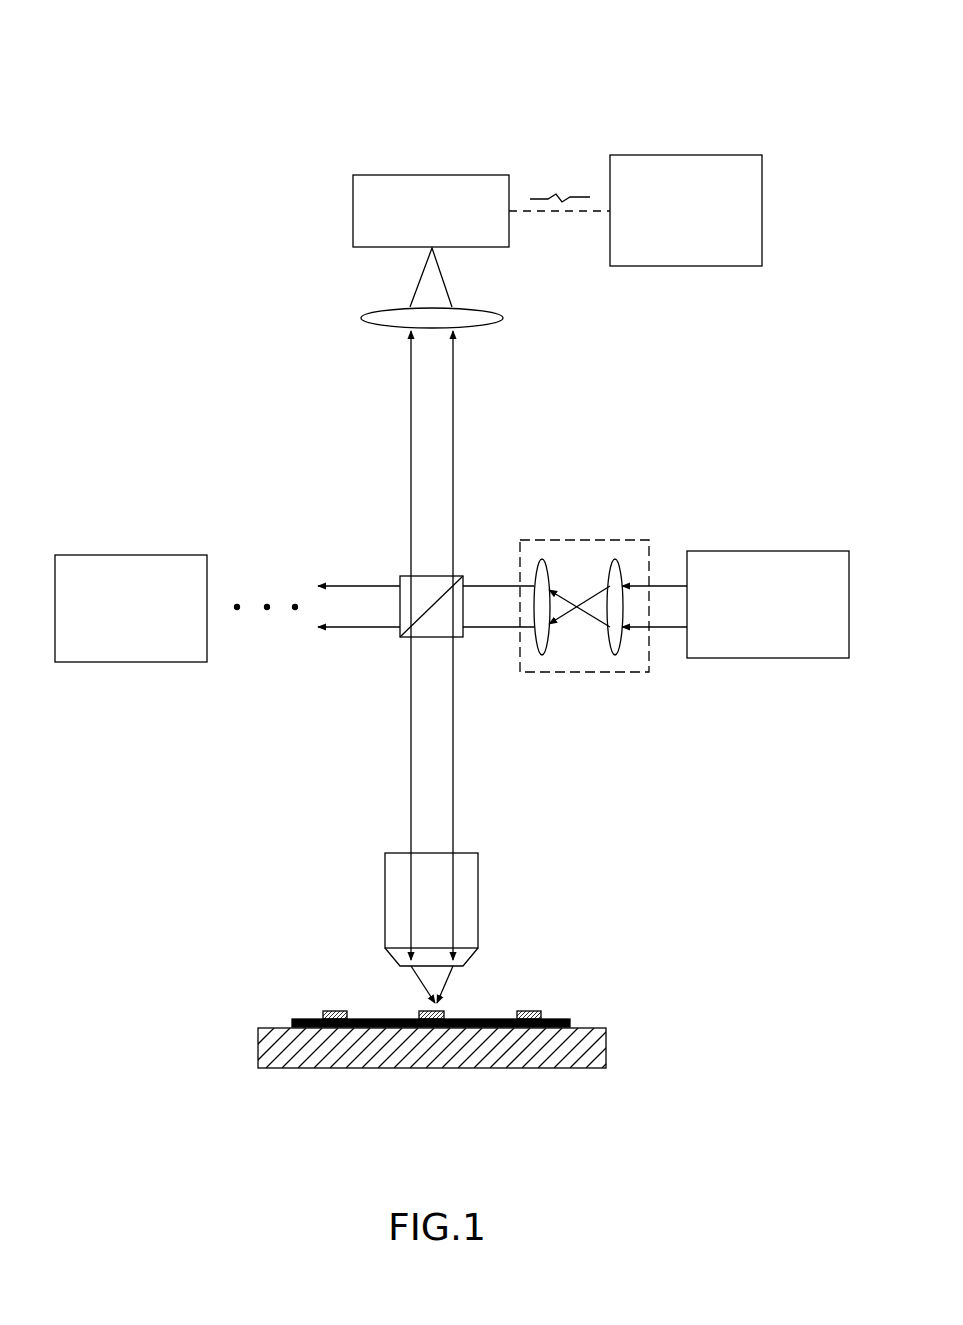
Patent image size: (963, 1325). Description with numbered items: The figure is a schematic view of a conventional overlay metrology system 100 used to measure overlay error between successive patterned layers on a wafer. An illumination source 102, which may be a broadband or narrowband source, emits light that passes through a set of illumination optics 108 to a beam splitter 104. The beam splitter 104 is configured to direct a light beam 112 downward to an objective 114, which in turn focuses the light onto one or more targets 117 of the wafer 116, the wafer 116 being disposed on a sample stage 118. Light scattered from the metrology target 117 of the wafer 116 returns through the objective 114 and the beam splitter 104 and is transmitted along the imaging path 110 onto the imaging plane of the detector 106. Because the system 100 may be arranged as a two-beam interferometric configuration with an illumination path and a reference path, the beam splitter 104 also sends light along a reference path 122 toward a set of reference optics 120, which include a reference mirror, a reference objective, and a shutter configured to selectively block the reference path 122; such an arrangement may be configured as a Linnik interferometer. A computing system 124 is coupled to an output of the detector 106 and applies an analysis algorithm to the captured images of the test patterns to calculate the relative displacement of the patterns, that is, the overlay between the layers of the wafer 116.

The overlay metrology system 100 is at (169, 72).
The illumination source 102 is at (768, 550).
The beam splitter 104 is at (408, 578).
The detector 106 is at (353, 210).
The illumination optics 108 is at (620, 540).
The imaging path 110 is at (432, 457).
The light beam 112 is at (432, 755).
The objective 114 is at (385, 870).
The wafer 116 is at (573, 1022).
The metrology target 117 is at (446, 1015).
The sample stage 118 is at (607, 1050).
The reference optics 120 is at (127, 553).
The reference path 122 is at (363, 608).
The computing system 124 is at (762, 210).